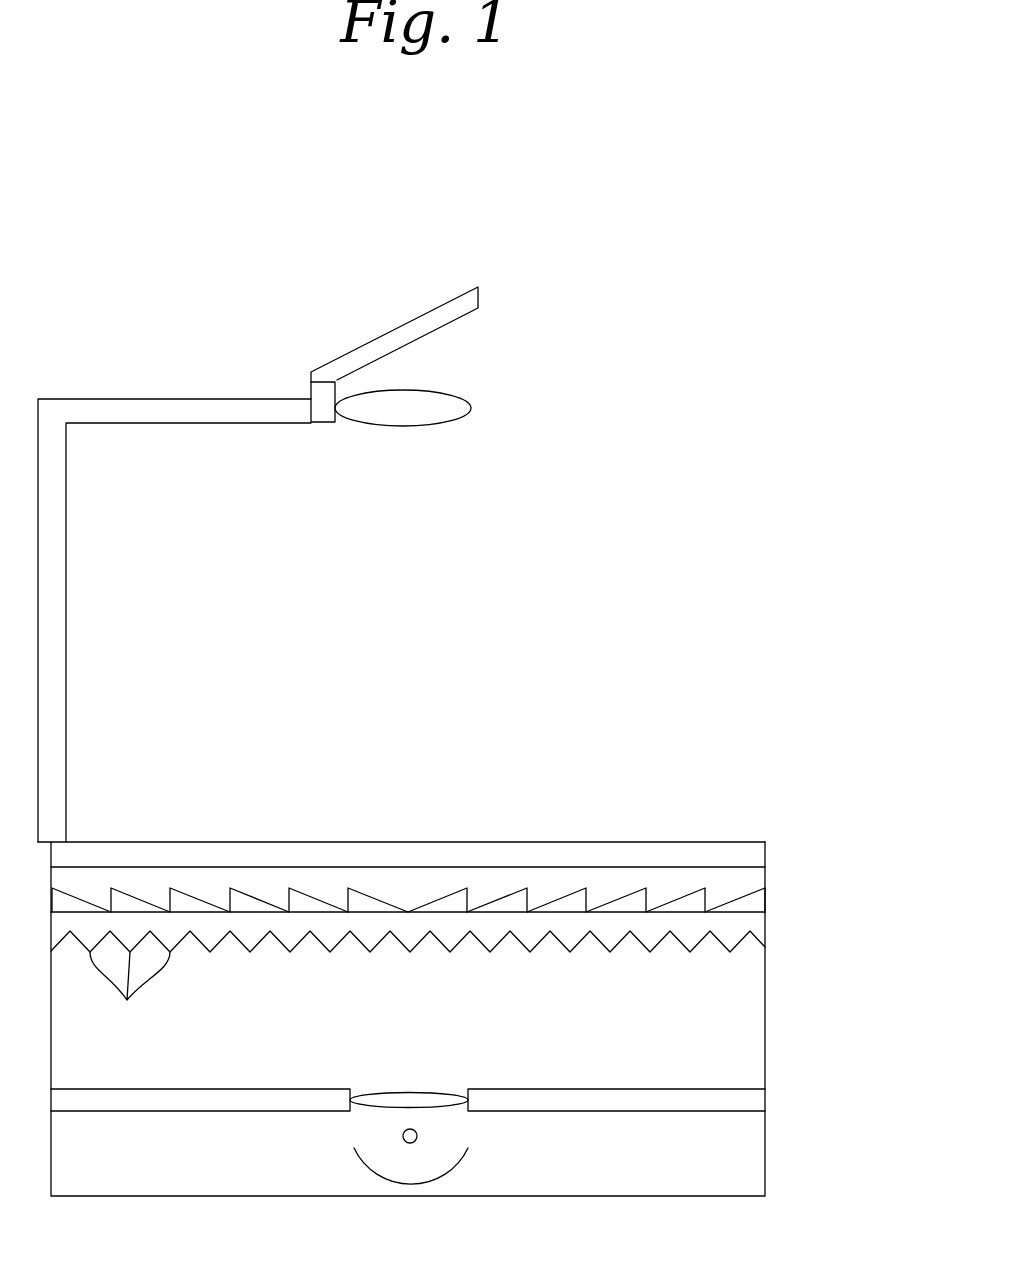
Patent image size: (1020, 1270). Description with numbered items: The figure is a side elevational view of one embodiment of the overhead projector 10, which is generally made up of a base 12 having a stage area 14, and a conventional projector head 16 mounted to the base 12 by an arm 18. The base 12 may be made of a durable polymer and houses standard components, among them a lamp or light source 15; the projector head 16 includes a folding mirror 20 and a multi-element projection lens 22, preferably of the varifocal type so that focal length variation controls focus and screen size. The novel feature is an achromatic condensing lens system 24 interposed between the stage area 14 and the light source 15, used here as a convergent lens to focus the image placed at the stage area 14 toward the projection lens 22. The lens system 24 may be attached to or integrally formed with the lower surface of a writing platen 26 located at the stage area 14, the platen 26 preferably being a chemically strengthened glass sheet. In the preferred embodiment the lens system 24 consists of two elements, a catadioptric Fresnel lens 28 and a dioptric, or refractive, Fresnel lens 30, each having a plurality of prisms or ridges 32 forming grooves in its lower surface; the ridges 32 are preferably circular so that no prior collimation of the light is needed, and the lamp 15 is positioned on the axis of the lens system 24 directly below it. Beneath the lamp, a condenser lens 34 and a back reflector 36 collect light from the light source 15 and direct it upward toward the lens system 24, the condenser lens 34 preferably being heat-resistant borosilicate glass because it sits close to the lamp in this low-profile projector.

The overhead projector 10 is at (700, 560).
The base 12 is at (790, 1062).
The stage area 14 is at (183, 818).
The light source 15 is at (417, 1133).
The projector head 16 is at (278, 305).
The arm 18 is at (66, 534).
The folding mirror 20 is at (427, 312).
The projection lens 22 is at (471, 408).
The achromatic condensing lens system 24 is at (790, 905).
The writing platen 26 is at (290, 842).
The catadioptric Fresnel lens 28 is at (700, 942).
The dioptric Fresnel lens 30 is at (348, 890).
The ridges 32 is at (127, 1000).
The condenser lens 34 is at (407, 1093).
The back reflector 36 is at (353, 1167).